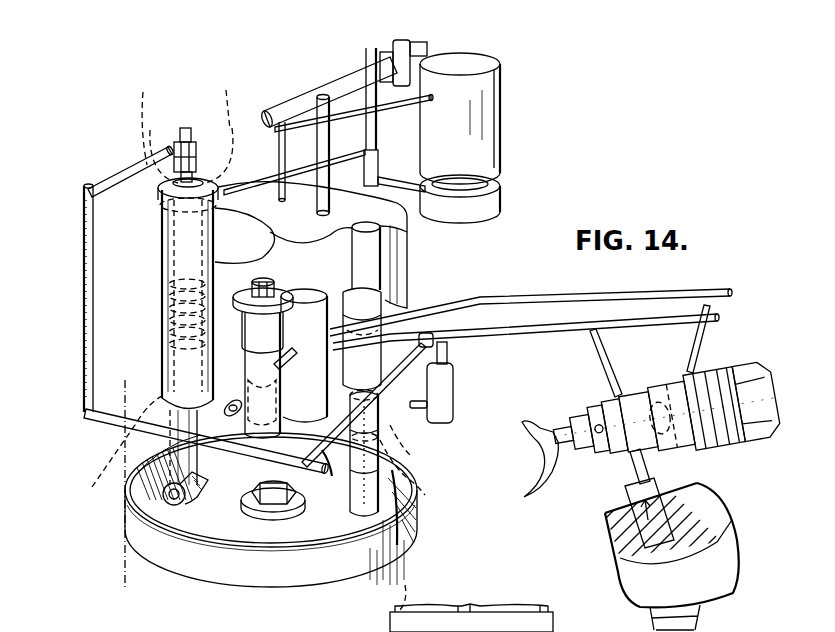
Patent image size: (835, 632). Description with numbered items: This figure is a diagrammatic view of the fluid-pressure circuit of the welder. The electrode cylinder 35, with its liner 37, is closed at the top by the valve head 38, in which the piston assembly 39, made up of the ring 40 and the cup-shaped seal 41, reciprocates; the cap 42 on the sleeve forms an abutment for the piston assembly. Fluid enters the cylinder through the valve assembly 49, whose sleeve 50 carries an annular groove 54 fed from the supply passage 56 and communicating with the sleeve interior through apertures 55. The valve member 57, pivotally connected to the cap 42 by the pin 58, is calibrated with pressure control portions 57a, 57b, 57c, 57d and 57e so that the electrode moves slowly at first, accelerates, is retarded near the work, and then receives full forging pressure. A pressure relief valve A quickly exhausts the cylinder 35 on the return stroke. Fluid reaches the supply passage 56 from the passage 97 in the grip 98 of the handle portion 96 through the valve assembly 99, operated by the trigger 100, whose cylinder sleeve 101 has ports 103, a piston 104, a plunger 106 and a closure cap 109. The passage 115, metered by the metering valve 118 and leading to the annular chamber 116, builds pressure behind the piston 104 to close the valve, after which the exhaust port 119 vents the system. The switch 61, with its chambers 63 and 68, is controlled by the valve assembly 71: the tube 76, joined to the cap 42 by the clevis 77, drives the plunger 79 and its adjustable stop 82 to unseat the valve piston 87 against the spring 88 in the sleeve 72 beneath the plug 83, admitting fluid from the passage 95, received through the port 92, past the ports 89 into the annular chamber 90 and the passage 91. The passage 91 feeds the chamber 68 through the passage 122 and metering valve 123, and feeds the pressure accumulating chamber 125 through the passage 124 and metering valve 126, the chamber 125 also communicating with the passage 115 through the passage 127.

The cylinder 35 is at (417, 468).
The liner 37 is at (115, 485).
The valve head 38 is at (84, 242).
The piston assembly 39 is at (406, 580).
The ring 40 is at (412, 606).
The flexible cup-shaped seal 41 is at (408, 556).
The cap 42 is at (205, 560).
The valve assembly 49 is at (392, 283).
The sleeve 50 is at (406, 292).
The annular groove 54 is at (428, 331).
The apertures 55 is at (280, 327).
The fluid pressure supply passage 56 is at (490, 328).
The valve member 57 is at (370, 470).
The pressure control portion 57a is at (417, 503).
The pressure control portion 57b is at (364, 409).
The pressure control portion 57c is at (388, 440).
The pressure control portion 57d is at (376, 410).
The pressure control portion 57e is at (383, 405).
The pin 58 is at (306, 505).
The switch 61 is at (508, 95).
The fluid pressure chamber 63 is at (488, 120).
The second chamber 68 is at (496, 203).
The valve assembly 71 is at (150, 212).
The sleeve 72 is at (150, 255).
The tube 76 is at (172, 420).
The clevis 77 is at (187, 497).
The plunger 79 is at (185, 130).
The stop 82 is at (194, 150).
The plug 83 is at (150, 112).
The valve piston 87 is at (240, 226).
The spring 88 is at (150, 320).
The ports 89 is at (158, 204).
The annular chamber 90 is at (92, 245).
The fluid supply passage 91 is at (270, 176).
The port 92 is at (232, 132).
The fluid pressure supply passage 95 is at (128, 172).
The handle portion 96 is at (703, 504).
The passage 97 is at (635, 540).
The grip 98 is at (735, 555).
The valve assembly 99 is at (640, 396).
The trigger 100 is at (548, 450).
The sleeve 101 is at (650, 452).
The ports 103 is at (602, 450).
The piston 104 is at (590, 455).
The plunger 106 is at (566, 447).
The closure cap 109 is at (755, 375).
The passage 115 is at (318, 350).
The annular chamber 116 is at (697, 452).
The metering valve 118 is at (272, 398).
The exhaust port 119 is at (648, 383).
The passage 122 is at (395, 185).
The metering valve 123 is at (379, 158).
The passage 124 is at (283, 133).
The pressure accumulating chamber 125 is at (330, 192).
The metering valve 126 is at (358, 78).
The passage 127 is at (220, 418).
The pressure relief valve A is at (453, 396).